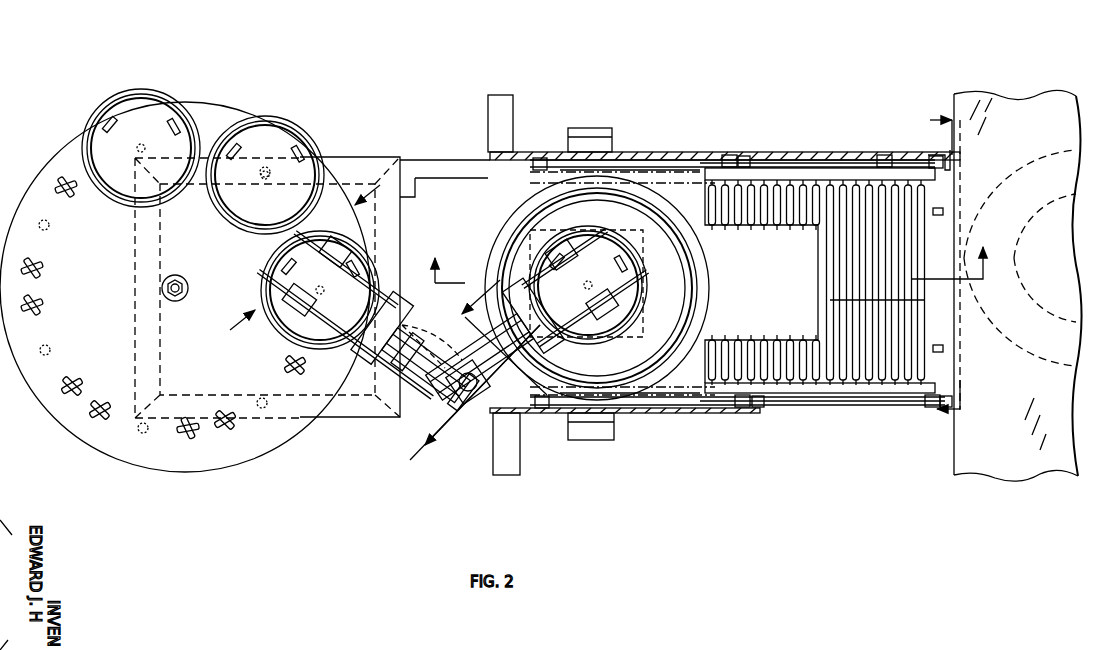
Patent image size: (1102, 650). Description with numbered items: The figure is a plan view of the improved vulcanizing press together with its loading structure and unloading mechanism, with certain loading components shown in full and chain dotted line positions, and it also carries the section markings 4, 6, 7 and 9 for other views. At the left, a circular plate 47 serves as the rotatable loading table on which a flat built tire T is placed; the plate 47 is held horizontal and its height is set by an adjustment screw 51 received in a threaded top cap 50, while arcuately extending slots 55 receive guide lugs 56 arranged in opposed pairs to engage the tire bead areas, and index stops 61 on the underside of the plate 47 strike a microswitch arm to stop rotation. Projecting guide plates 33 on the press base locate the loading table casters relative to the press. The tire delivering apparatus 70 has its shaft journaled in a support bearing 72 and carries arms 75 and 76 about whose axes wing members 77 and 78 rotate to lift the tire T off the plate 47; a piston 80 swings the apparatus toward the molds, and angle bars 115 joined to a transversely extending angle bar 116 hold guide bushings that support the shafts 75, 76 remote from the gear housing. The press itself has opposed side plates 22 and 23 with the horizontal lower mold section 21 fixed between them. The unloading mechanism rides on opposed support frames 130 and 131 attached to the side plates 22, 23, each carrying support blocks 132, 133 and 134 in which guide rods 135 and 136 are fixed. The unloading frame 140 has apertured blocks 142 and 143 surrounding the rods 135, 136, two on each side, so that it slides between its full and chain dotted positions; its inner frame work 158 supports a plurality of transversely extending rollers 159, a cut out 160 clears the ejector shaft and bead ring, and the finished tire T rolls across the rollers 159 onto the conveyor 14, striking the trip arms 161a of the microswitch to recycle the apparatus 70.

The conveyor 14 is at (1010, 92).
The lower mold section 21 is at (692, 270).
The side plate 22 is at (632, 152).
The side plate 23 is at (650, 413).
The guide plate 33 is at (430, 160).
The circular plate 47 is at (200, 472).
The top cap 50 is at (178, 301).
The adjustment screw 51 is at (180, 278).
The arcuately extending slot 55 is at (45, 273).
The guide lug 56 is at (45, 307).
The index stop 61 is at (52, 347).
The tire delivering apparatus 70 is at (466, 395).
The support bearing 72 is at (463, 392).
The arm 75 is at (460, 345).
The arm 76 is at (426, 365).
The wing member 77 is at (335, 251).
The wing member 78 is at (346, 333).
The piston 80 is at (382, 327).
The angle bar 115 is at (407, 352).
The transversely extending angle bar 116 is at (346, 269).
The support frame 130 is at (790, 406).
The support frame 131 is at (778, 160).
The support block 132 is at (540, 157).
The support block 133 is at (743, 155).
The support block 134 is at (942, 155).
The guide rod 135 is at (680, 405).
The guide rod 136 is at (675, 165).
The unloading frame 140 is at (800, 180).
The apertured block 142 is at (728, 155).
The apertured block 143 is at (740, 408).
The inner frame work 158 is at (830, 180).
The roller 159 is at (835, 268).
The cut out 160 is at (830, 288).
The trip arm 161a is at (945, 211).
The section line 4- 4 is at (459, 370).
The section line 6- 6 is at (304, 263).
The section line 7- 7 is at (945, 280).
The section line 9- 9 is at (708, 265).
The tire T is at (138, 90).